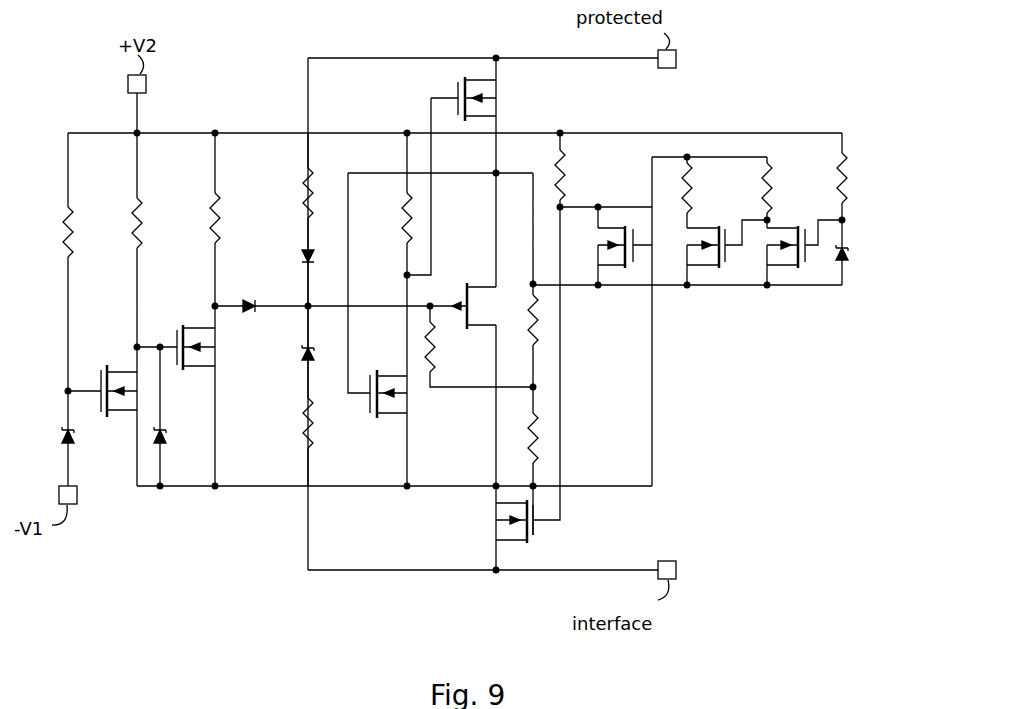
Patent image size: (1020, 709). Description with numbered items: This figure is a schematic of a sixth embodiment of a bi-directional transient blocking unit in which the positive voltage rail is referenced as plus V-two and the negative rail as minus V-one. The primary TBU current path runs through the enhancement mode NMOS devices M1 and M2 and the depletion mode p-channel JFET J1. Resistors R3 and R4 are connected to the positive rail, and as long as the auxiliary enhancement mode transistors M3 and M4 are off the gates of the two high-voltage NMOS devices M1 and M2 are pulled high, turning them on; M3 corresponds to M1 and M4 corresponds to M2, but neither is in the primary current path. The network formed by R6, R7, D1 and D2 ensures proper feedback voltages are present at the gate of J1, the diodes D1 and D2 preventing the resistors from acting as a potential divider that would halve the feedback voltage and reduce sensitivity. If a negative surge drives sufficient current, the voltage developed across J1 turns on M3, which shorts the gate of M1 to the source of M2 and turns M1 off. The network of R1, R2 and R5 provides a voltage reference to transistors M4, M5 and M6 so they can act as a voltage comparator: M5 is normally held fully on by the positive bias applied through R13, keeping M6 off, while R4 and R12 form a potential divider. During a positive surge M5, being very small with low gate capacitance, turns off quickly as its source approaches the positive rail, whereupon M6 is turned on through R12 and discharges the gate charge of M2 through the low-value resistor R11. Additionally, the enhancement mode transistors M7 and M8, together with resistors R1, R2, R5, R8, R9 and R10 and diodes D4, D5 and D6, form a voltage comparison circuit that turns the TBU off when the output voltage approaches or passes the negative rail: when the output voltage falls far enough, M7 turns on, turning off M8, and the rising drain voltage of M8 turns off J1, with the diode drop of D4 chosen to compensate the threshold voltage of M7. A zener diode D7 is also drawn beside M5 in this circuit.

The resistor R8 is at (73, 228).
The resistor R9 is at (142, 222).
The resistor R10 is at (220, 225).
The resistor R6 is at (312, 196).
The diode D1 is at (302, 256).
The diode D6 is at (249, 300).
The diode D2 is at (300, 352).
The resistor R7 is at (305, 426).
The enhancement mode MOS transistor M7 is at (105, 369).
The enhancement mode MOS transistor M8 is at (181, 326).
The diode D4 is at (73, 441).
The diode D5 is at (167, 442).
The resistor R3 is at (404, 227).
The auxiliary transistor M3 is at (374, 420).
The primary transistor M1 is at (465, 79).
The JFET J1 is at (467, 284).
The resistor R5 is at (434, 346).
The resistor R1 is at (530, 322).
The resistor R2 is at (530, 438).
The primary transistor M2 is at (530, 544).
The resistor R4 is at (556, 186).
The auxiliary transistor M4 is at (625, 227).
The resistor R11 is at (692, 183).
The transistor M6 is at (720, 227).
The resistor R12 is at (771, 192).
The transistor M5 is at (800, 227).
The resistor R13 is at (846, 186).
The zener diode D7 is at (848, 259).